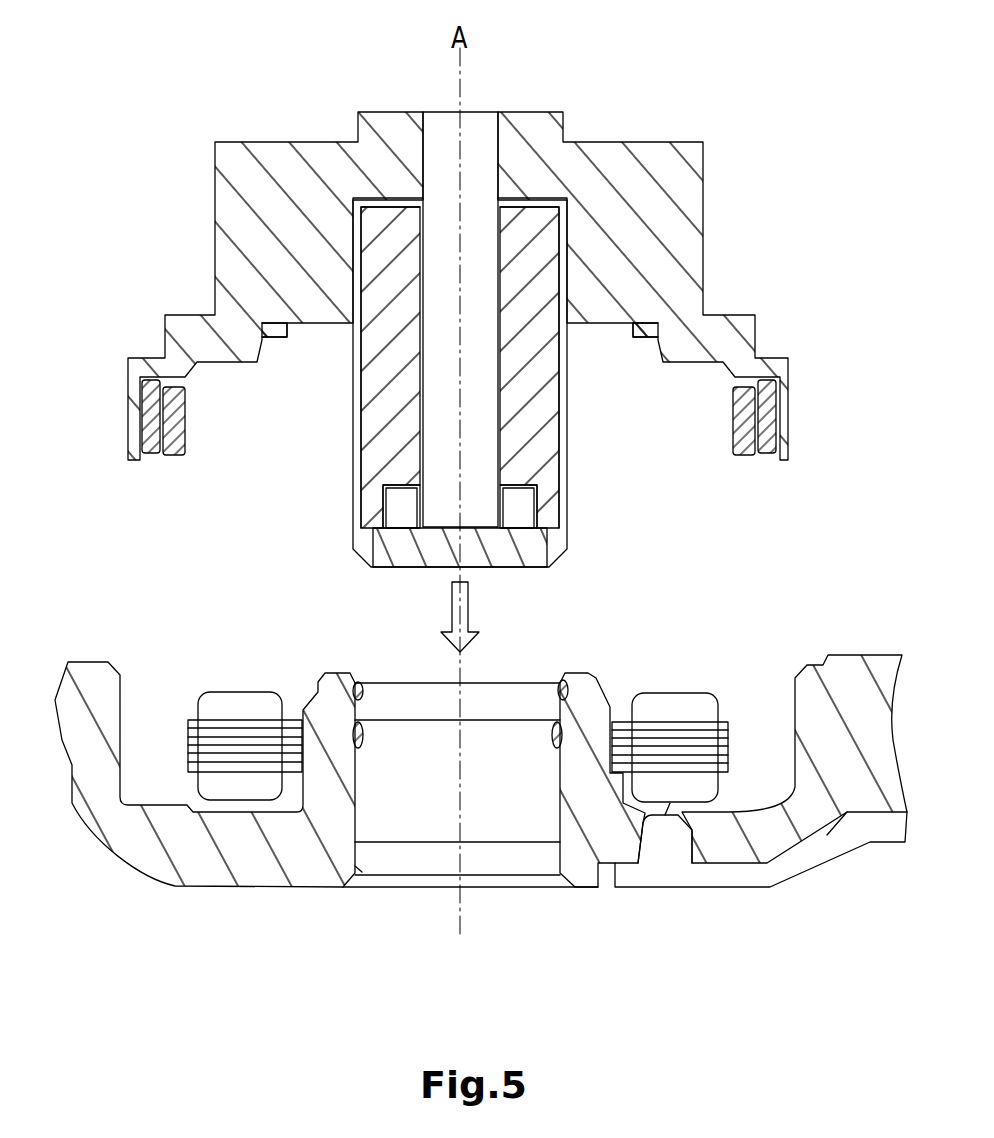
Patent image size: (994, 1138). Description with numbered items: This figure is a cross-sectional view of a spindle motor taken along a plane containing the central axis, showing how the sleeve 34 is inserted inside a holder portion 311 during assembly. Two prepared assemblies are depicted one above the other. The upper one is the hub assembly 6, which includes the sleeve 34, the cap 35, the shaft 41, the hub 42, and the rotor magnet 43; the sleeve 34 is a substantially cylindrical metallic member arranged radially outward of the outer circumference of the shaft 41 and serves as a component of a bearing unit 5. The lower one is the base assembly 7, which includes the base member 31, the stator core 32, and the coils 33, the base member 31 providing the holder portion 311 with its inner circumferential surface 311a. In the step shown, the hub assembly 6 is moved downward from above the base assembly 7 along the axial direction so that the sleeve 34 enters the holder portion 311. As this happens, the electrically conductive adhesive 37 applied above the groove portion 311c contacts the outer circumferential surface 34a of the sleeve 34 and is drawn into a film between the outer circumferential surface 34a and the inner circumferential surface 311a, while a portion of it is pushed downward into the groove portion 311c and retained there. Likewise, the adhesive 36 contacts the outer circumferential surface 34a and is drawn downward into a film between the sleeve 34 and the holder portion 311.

The bearing unit 5 is at (526, 340).
The hub assembly 6 is at (458, 232).
The base assembly 7 is at (481, 819).
The base member 31 is at (481, 789).
The stator core 32 is at (233, 803).
The coils 33 is at (270, 787).
The sleeve 34 is at (557, 365).
The outer circumferential surface 34a is at (563, 418).
The cap 35 is at (494, 552).
The adhesive 36 is at (363, 735).
The electrically conductive adhesive 37 is at (368, 690).
The shaft 41 is at (481, 128).
The hub 42 is at (614, 165).
The rotor magnet 43 is at (180, 427).
The holder portion 311 is at (499, 789).
The inner circumferential surface 311a is at (357, 862).
The groove portion 311c is at (571, 684).